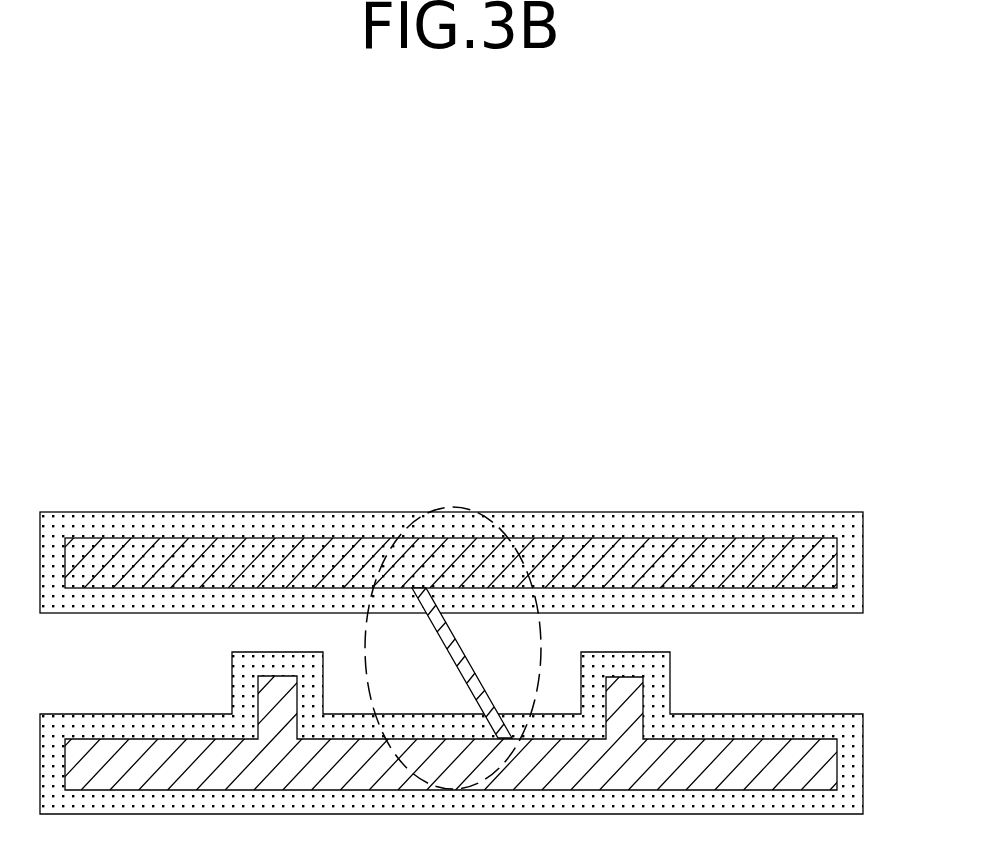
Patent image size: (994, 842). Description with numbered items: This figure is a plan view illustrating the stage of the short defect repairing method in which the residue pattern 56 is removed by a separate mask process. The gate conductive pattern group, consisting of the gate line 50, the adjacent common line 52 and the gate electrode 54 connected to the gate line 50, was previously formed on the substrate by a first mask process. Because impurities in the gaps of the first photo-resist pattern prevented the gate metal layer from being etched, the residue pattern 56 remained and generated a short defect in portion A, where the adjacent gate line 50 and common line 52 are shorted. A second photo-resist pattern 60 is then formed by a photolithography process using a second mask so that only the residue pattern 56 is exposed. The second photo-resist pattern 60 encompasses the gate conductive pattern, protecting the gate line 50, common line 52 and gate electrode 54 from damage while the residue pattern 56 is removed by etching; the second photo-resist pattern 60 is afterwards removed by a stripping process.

The gate line 50 is at (820, 767).
The common line 52 is at (826, 566).
The gate electrode 54 is at (640, 690).
The residue pattern 56 is at (480, 680).
The second photo-resist pattern 60 is at (588, 518).
The portion A is at (468, 507).